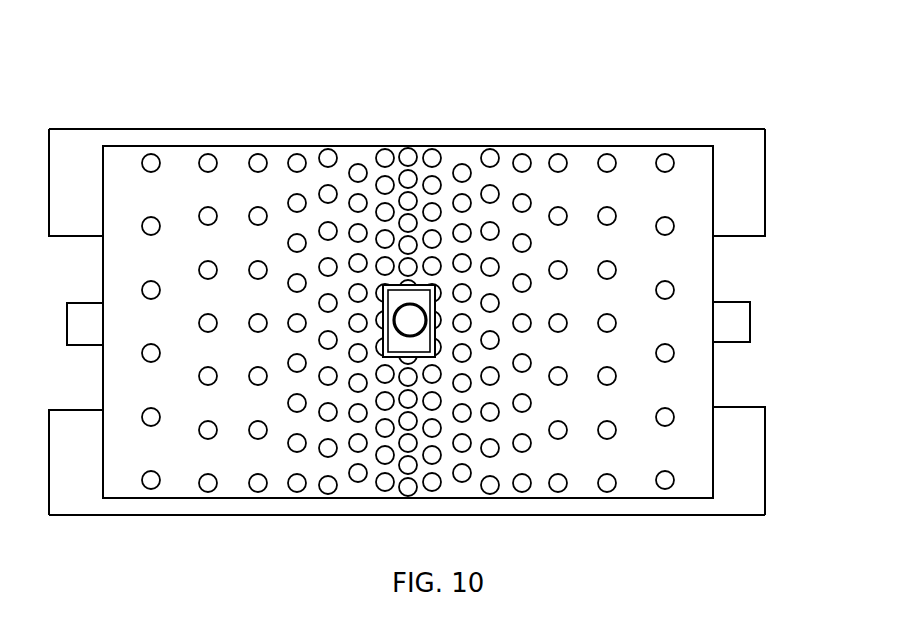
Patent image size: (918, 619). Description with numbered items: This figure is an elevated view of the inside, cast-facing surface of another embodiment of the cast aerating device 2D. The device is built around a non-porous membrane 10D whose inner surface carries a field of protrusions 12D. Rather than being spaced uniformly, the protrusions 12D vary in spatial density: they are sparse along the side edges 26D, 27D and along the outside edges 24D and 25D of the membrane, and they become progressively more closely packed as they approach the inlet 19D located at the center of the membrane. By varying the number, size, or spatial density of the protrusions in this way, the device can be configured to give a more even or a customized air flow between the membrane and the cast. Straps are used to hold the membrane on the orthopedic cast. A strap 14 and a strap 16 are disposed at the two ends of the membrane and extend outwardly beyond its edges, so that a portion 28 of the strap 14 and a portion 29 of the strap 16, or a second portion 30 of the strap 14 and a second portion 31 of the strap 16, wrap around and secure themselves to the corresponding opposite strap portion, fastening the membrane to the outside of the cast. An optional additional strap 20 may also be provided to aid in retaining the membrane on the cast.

The cast aerating device 2D is at (681, 100).
The non-porous membrane 10D is at (520, 129).
The protrusions 12D is at (607, 157).
The strap 14 is at (765, 472).
The strap 16 is at (765, 185).
The inlet 19D is at (413, 318).
The strap 20 is at (750, 320).
The outside edge 24D is at (545, 498).
The outside edge 25D is at (300, 146).
The edge 26D is at (713, 262).
The edge 27D is at (103, 268).
The portion of strap 28 is at (752, 476).
The portion of strap 29 is at (751, 199).
The second portion of strap 30 is at (94, 479).
The second portion of strap 31 is at (96, 199).